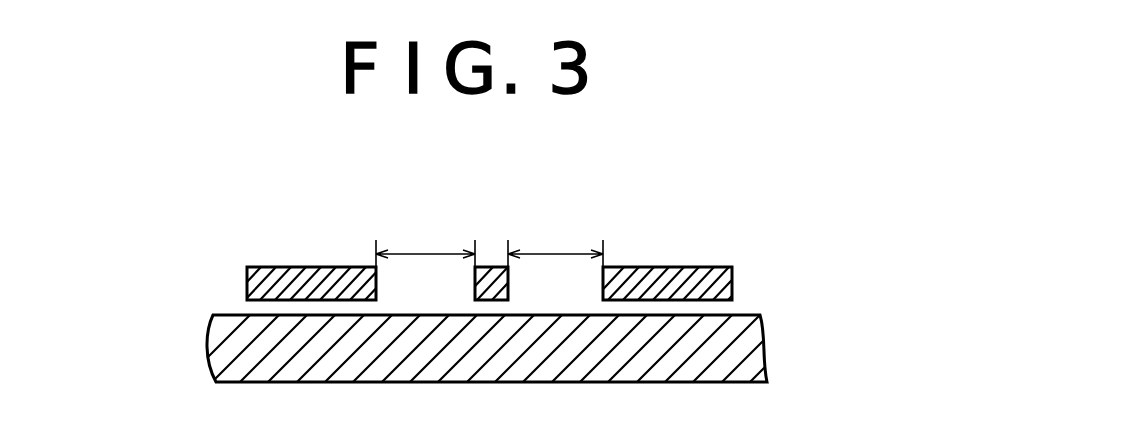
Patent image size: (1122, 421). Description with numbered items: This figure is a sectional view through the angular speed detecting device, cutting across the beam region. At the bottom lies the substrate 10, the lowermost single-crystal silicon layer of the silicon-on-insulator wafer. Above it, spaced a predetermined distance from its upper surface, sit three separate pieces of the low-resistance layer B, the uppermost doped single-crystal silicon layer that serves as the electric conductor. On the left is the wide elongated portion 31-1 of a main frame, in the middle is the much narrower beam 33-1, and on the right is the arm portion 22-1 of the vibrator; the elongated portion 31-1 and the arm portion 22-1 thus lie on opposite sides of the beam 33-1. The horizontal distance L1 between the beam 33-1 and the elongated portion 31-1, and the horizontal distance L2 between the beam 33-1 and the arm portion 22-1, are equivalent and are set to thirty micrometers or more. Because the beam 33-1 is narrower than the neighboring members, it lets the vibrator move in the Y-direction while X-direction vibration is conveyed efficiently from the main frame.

The substrate 10 is at (763, 337).
The elongated portion 31-1 is at (272, 267).
The beam 33-1 is at (495, 267).
The arm portion 22-1 is at (692, 267).
The low-resistance layer B is at (733, 280).
The horizontal distance L1 is at (425, 237).
The horizontal distance L2 is at (555, 237).